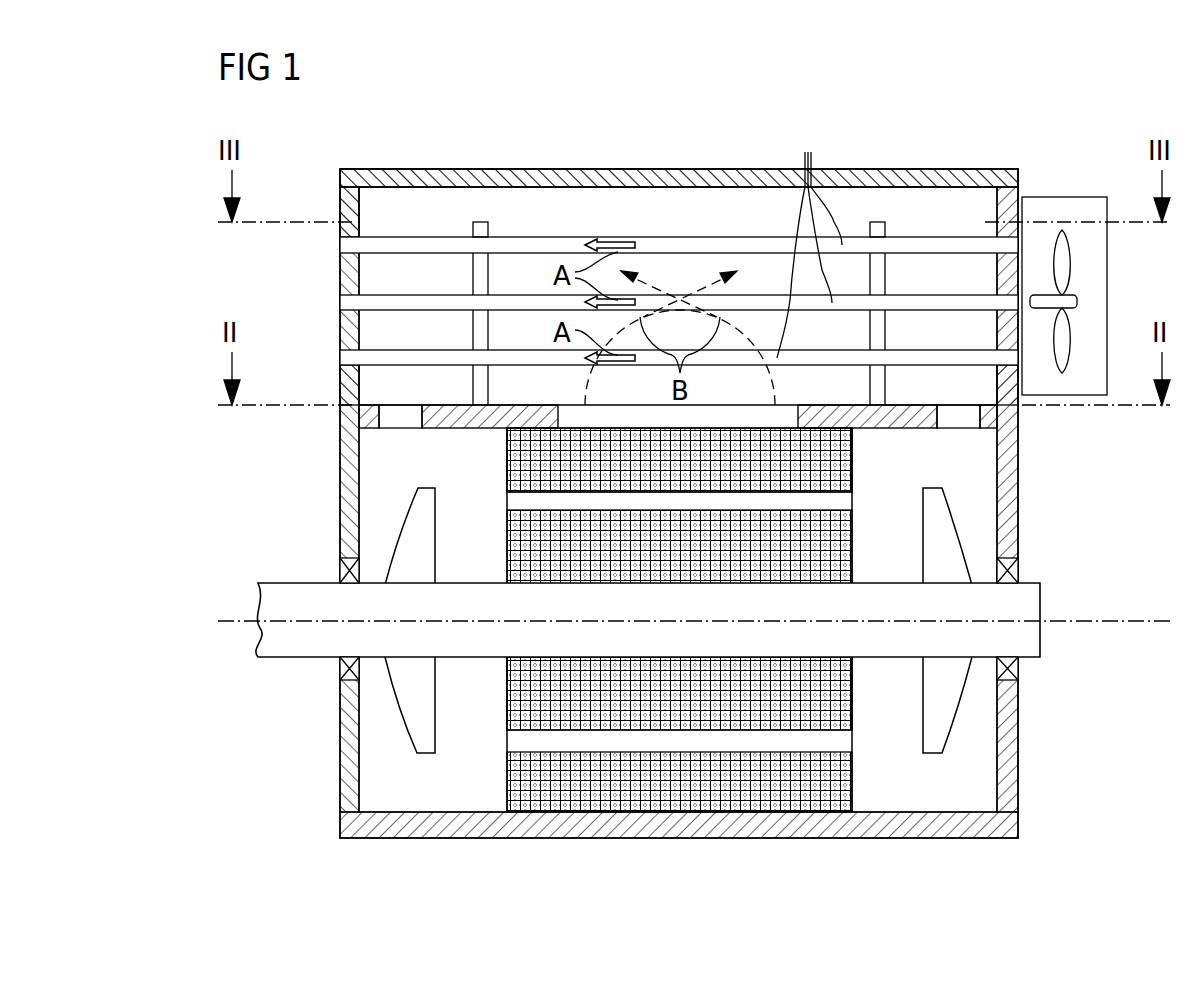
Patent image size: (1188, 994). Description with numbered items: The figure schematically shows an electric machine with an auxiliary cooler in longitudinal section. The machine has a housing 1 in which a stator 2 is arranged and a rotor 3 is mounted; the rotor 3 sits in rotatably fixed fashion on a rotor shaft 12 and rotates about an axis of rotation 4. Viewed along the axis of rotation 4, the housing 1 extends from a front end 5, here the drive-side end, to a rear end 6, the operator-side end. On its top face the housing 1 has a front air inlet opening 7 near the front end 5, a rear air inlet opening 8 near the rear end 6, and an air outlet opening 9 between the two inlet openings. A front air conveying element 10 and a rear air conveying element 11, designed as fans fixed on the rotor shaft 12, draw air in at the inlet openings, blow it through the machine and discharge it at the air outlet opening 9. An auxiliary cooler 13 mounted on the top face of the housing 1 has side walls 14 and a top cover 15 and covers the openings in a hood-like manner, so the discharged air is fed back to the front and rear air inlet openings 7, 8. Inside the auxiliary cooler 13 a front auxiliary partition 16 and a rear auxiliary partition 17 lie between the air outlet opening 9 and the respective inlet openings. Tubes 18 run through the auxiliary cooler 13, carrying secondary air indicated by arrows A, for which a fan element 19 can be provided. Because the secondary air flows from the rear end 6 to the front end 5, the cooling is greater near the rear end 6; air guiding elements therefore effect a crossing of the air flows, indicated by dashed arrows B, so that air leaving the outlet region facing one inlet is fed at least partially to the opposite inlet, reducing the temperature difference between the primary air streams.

The housing 1 is at (1005, 527).
The stator 2 is at (507, 778).
The rotor 3 is at (507, 693).
The axis of rotation 4 is at (232, 622).
The front end 5 is at (322, 385).
The rear end 6 is at (1045, 425).
The front air inlet opening 7 is at (400, 420).
The rear air inlet opening 8 is at (960, 418).
The air outlet opening 9 is at (680, 432).
The front air conveying element 10 is at (423, 545).
The rear air conveying element 11 is at (933, 545).
The rotor shaft 12 is at (300, 650).
The auxiliary cooler 13 is at (325, 205).
The side walls 14 is at (344, 275).
The top cover 15 is at (713, 182).
The front auxiliary partition 16 is at (489, 230).
The rear auxiliary partition 17 is at (886, 230).
The tubes 18 is at (809, 241).
The fan element 19 is at (1078, 300).